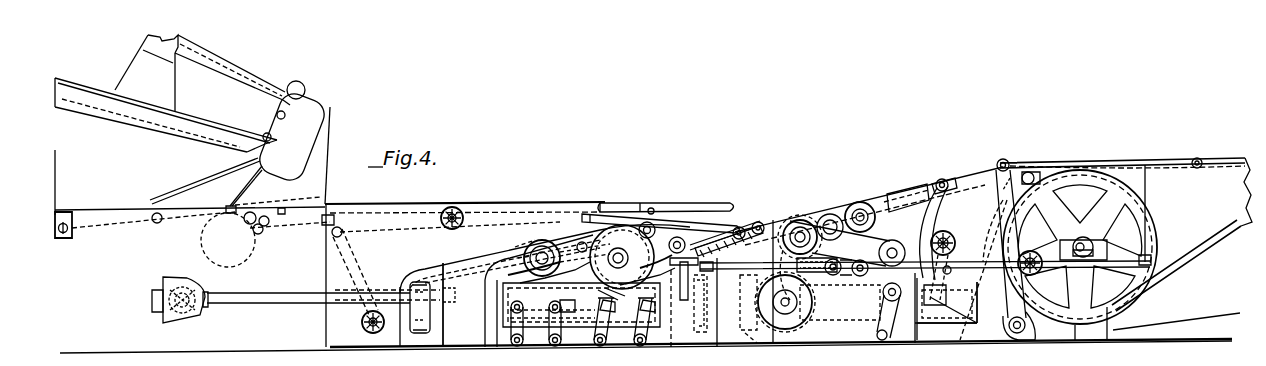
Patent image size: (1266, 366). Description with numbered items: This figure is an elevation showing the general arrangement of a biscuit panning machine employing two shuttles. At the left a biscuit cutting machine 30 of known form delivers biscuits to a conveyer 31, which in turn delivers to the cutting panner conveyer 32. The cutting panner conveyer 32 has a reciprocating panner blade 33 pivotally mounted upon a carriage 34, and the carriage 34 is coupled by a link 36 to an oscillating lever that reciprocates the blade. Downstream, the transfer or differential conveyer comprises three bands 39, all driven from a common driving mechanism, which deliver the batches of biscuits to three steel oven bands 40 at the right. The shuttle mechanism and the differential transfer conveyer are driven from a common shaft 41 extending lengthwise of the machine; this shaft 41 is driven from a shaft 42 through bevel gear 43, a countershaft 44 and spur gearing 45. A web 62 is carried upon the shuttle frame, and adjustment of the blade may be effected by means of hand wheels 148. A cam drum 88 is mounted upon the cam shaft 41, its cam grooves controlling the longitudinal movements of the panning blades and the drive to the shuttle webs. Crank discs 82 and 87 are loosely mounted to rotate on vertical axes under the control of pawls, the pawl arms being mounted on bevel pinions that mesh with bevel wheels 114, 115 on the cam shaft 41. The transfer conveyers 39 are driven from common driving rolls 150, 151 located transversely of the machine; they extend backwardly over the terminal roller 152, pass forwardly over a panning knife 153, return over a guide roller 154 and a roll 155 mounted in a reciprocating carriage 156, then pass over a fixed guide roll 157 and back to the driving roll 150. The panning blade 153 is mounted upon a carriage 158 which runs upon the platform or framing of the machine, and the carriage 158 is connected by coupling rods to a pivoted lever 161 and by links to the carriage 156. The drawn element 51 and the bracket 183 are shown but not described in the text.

The biscuit cutting machine 30 is at (58, 198).
The conveyer 31 is at (203, 208).
The cutting panner conveyer 32 is at (320, 206).
The reciprocating panner blade 33 is at (740, 221).
The carriage 34 is at (605, 205).
The link 36 is at (378, 237).
The transfer bands 39 is at (885, 203).
The oven bands 40 is at (1220, 165).
The common shaft 41 is at (472, 312).
The shaft 42 is at (193, 291).
The bevel gear 43 is at (185, 311).
The countershaft 44 is at (292, 304).
The spur gearing 45 is at (420, 332).
The feed chute 51 is at (726, 224).
The web 62 is at (457, 283).
The crank disc 82 is at (718, 270).
The crank disc 87 is at (682, 272).
The cam drum 88 is at (588, 320).
The bevel wheel 114 is at (748, 332).
The bevel wheel 115 is at (701, 334).
The hand wheel 148 is at (452, 207).
The driving roll 150 is at (808, 220).
The driving roll 151 is at (870, 205).
The terminal roller 152 is at (722, 224).
The panning knife 153 is at (1195, 163).
The guide roller 154 is at (1029, 176).
The roll 155 is at (922, 193).
The reciprocating carriage 156 is at (943, 230).
The fixed guide roll 157 is at (1001, 161).
The carriage 158 is at (1117, 158).
The lever 161 is at (1015, 232).
The support bracket 183 is at (945, 312).